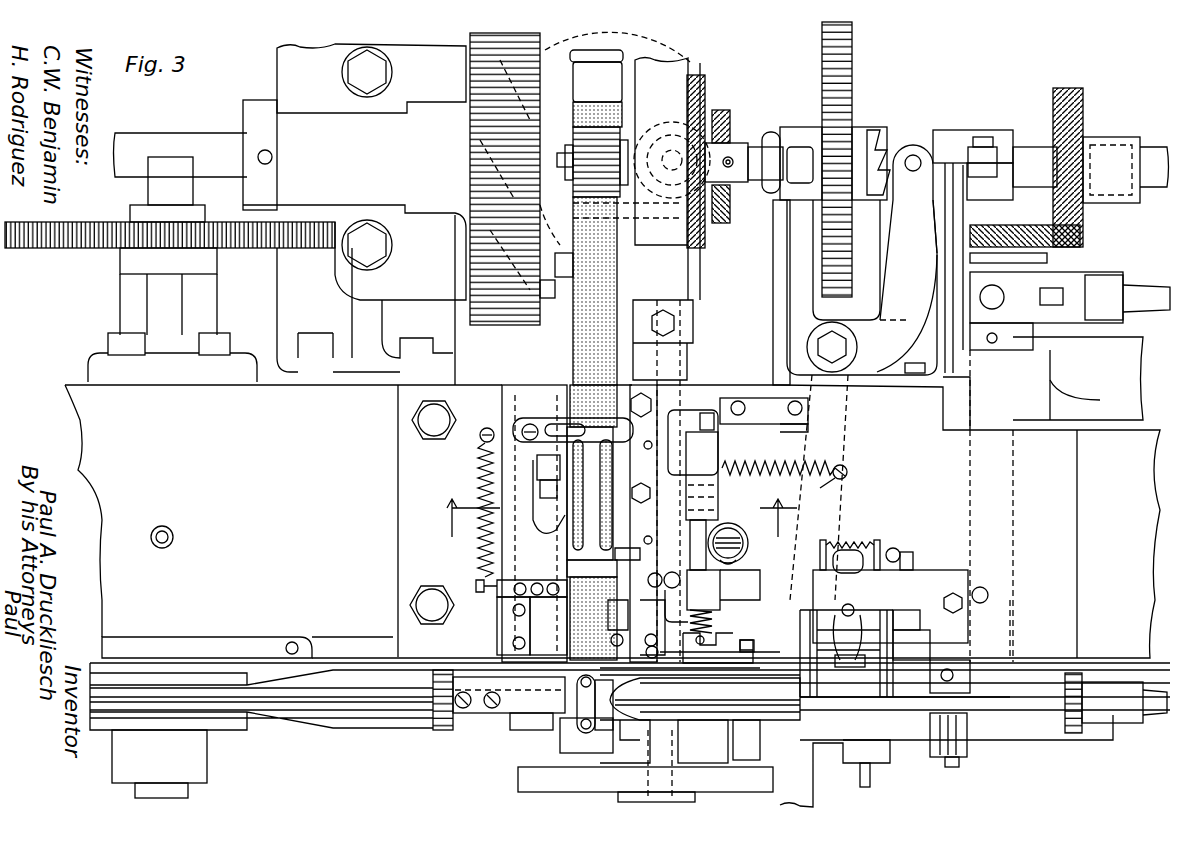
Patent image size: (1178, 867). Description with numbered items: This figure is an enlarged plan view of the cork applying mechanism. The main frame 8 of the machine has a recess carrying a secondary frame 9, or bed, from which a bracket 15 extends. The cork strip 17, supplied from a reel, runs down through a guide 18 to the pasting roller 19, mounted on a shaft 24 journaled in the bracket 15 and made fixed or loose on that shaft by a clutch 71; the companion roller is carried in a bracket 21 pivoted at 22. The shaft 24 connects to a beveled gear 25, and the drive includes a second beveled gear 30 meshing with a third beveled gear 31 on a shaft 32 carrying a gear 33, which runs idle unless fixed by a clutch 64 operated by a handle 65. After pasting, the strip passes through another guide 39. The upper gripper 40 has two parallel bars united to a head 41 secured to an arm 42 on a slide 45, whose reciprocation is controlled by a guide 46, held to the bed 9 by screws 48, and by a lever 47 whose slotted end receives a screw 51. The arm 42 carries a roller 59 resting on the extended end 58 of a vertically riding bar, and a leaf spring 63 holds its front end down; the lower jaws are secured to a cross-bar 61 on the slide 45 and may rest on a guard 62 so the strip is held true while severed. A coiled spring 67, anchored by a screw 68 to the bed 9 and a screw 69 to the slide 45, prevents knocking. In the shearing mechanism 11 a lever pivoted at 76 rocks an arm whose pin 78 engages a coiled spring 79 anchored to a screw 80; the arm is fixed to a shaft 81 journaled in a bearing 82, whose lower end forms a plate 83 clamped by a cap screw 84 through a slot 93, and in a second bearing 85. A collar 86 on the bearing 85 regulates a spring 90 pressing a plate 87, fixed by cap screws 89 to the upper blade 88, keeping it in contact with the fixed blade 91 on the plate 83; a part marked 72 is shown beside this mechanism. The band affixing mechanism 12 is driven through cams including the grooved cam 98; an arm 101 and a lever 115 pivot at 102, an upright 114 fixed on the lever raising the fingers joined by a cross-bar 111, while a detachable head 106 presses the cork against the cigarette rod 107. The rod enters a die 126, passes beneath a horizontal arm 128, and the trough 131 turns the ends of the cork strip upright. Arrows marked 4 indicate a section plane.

The section line 4 is at (614, 518).
The main frame 8 is at (612, 526).
The secondary frame 9 is at (398, 462).
The shearing mechanism 11 is at (745, 655).
The band affixing mechanism 12 is at (575, 728).
The bracket 15 is at (671, 219).
The cork strip 17 is at (617, 45).
The guide 18 is at (596, 76).
The pasting roller 19 is at (620, 142).
The bracket 21 is at (573, 218).
The pivot 22 is at (550, 294).
The shaft 24 is at (790, 145).
The beveled gear 25 is at (698, 80).
The second beveled gear 30 is at (716, 215).
The third beveled gear 31 is at (722, 110).
The shaft 32 is at (885, 140).
The gear 33 is at (822, 58).
The guide 39 is at (567, 362).
The upper gripper 40 is at (567, 630).
The head 41 is at (567, 608).
The arm 42 is at (625, 405).
The slide 45 is at (505, 408).
The guide 46 is at (513, 611).
The lever 47 is at (565, 535).
The screws 48 is at (513, 643).
The screw 51 is at (551, 472).
The extended upper end 58 is at (656, 573).
The roller 59 is at (625, 548).
The cross-bar 61 is at (497, 603).
The guard 62 is at (284, 644).
The leaf spring 63 is at (540, 425).
The clutch 64 is at (905, 130).
The handle 65 is at (813, 782).
The coiled spring 67 is at (478, 468).
The screw 68 is at (481, 436).
The screw 69 is at (476, 585).
The clutch 71 is at (768, 132).
The block 72 is at (690, 442).
The pivot 76 is at (780, 418).
The pin 78 is at (683, 529).
The coiled spring 79 is at (822, 494).
The screw 80 is at (840, 465).
The shaft 81 is at (748, 407).
The bearing 82 is at (702, 476).
The plate 83 is at (722, 490).
The clamping screw 84 is at (750, 543).
The second bearing 85 is at (740, 585).
The collar 86 is at (716, 616).
The plate 87 is at (718, 650).
The blade 88 is at (660, 652).
The cap screws 89 is at (755, 645).
The spring 90 is at (703, 591).
The fixed blade 91 is at (700, 651).
The slot 93 is at (745, 565).
The cam 98 is at (517, 780).
The arm 101 is at (967, 716).
The pivot 102 is at (952, 757).
The detachable head 106 is at (550, 728).
The cigarette rod 107 is at (365, 700).
The cross-bar 111 is at (585, 737).
The upright 114 is at (619, 766).
The lever 115 is at (967, 740).
The die 126 is at (460, 729).
The horizontal arm 128 is at (510, 674).
The trough 131 is at (680, 741).